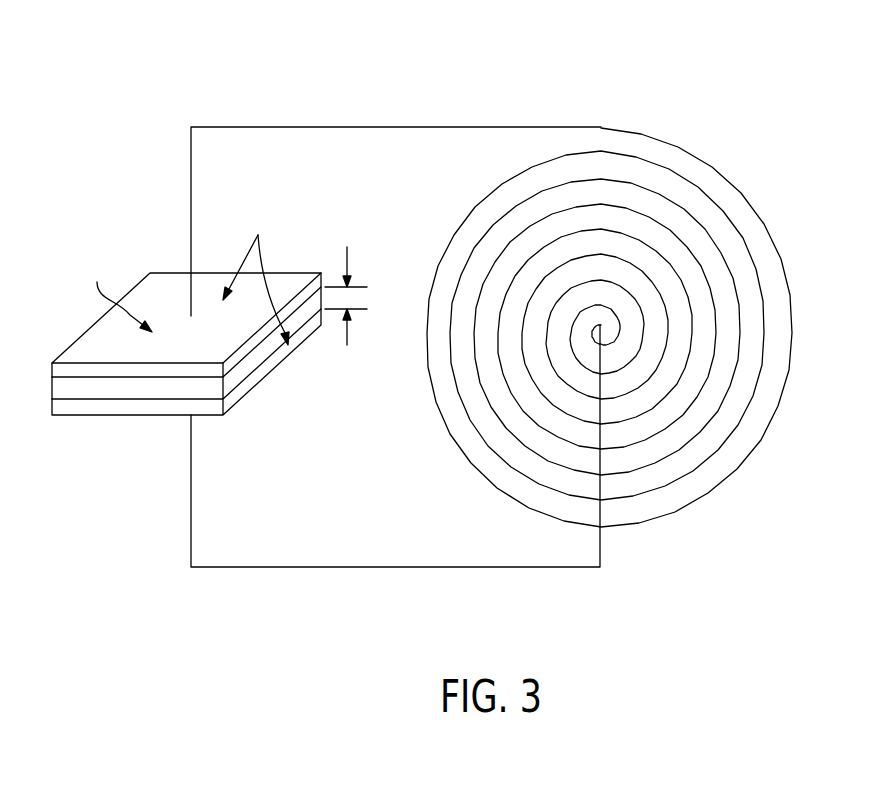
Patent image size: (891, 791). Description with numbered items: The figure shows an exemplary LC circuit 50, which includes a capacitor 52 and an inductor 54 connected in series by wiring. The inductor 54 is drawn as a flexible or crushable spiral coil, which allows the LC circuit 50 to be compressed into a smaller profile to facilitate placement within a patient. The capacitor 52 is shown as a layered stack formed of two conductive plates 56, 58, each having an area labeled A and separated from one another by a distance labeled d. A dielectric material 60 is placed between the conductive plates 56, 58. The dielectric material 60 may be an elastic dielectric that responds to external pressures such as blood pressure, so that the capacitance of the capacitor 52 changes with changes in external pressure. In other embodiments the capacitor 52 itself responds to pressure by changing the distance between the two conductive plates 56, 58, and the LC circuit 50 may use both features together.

The LC circuit 50 is at (86, 85).
The capacitor 52 is at (162, 281).
The inductor 54 is at (770, 236).
The conductive plate 56 is at (85, 345).
The conductive plate 58 is at (98, 407).
The dielectric material 60 is at (236, 395).